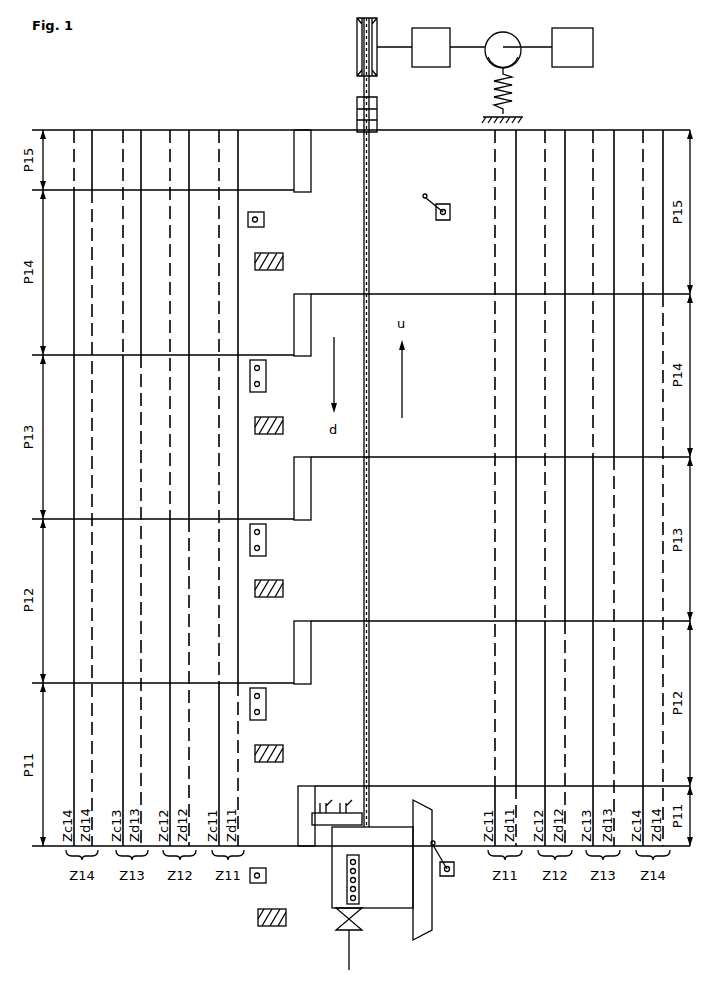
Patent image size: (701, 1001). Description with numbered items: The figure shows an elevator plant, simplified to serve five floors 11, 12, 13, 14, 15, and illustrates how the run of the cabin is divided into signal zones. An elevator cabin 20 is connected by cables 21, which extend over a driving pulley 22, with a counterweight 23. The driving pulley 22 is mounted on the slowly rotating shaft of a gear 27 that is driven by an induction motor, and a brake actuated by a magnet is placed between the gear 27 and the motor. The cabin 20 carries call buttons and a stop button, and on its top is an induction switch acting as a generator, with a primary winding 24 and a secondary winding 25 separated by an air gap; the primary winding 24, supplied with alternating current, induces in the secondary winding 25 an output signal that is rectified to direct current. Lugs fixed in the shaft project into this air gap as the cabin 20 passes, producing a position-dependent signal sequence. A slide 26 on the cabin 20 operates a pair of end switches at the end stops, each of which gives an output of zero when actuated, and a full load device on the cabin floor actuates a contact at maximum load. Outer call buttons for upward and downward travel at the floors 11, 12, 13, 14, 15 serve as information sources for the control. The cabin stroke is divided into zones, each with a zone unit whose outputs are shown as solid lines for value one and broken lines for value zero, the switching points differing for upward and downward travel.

The floor 11 is at (282, 918).
The floor 12 is at (279, 755).
The floor 13 is at (279, 590).
The floor 14 is at (279, 427).
The floor 15 is at (279, 262).
The elevator cabin 20 is at (372, 877).
The cables 21 is at (370, 527).
The driving pulley 22 is at (357, 47).
The counterweight 23 is at (357, 124).
The primary winding 24 is at (337, 805).
The secondary winding 25 is at (350, 799).
The slide 26 is at (432, 920).
The gear 27 is at (421, 59).